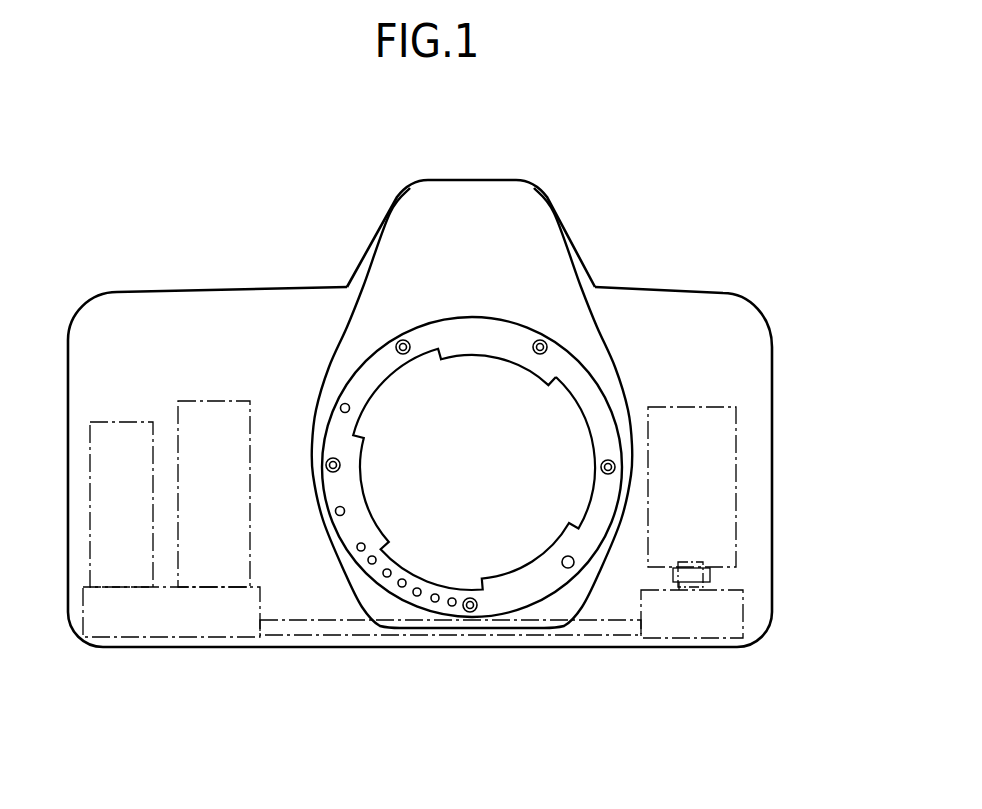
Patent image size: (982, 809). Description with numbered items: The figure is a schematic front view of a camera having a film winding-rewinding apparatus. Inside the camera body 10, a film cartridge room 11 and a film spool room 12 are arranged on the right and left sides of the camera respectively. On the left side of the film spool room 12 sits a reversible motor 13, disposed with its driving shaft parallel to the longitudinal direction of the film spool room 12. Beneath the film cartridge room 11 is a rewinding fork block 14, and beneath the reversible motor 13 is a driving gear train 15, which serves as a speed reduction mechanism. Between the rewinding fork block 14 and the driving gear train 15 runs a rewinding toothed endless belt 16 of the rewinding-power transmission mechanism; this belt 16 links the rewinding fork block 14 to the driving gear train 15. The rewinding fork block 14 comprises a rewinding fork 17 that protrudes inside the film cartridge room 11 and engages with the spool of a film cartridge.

The camera body 10 is at (769, 290).
The film cartridge room 11 is at (735, 492).
The film spool room 12 is at (213, 416).
The reversible motor 13 is at (122, 436).
The rewinding fork block 14 is at (693, 632).
The driving gear train 15 is at (168, 630).
The rewinding toothed endless belt 16 is at (613, 630).
The rewinding fork 17 is at (700, 588).